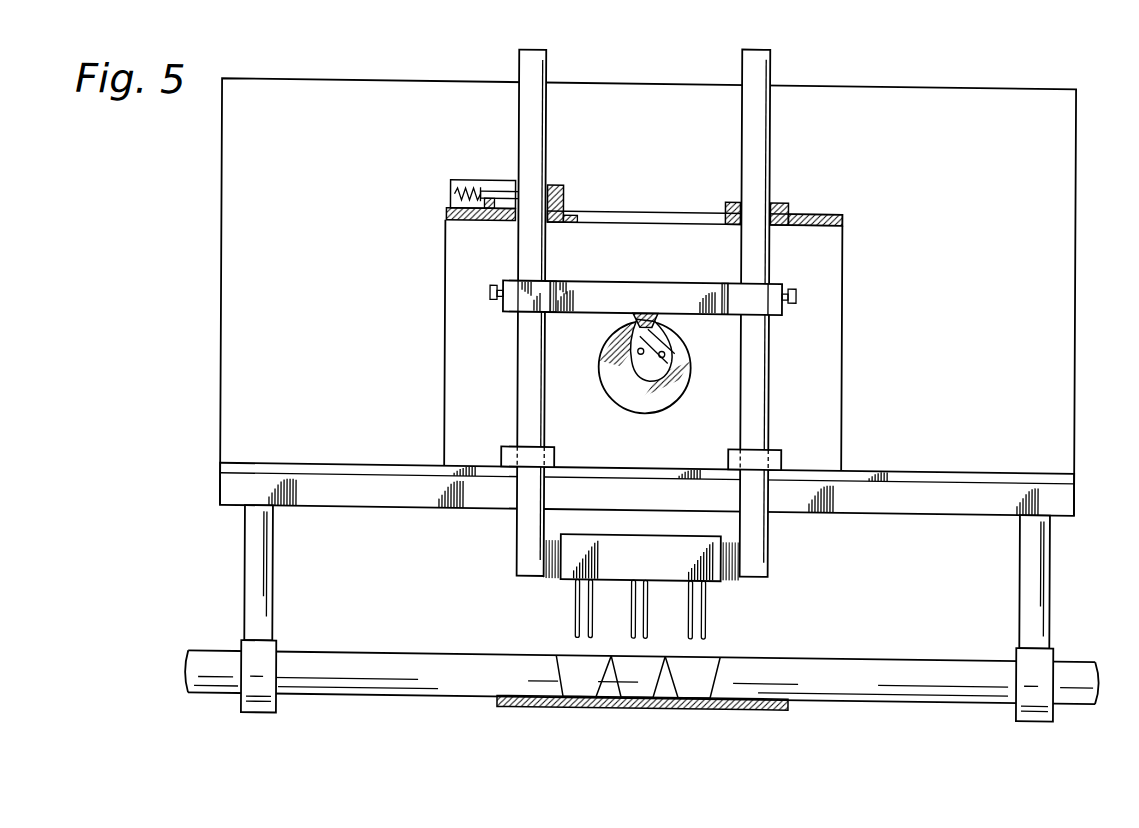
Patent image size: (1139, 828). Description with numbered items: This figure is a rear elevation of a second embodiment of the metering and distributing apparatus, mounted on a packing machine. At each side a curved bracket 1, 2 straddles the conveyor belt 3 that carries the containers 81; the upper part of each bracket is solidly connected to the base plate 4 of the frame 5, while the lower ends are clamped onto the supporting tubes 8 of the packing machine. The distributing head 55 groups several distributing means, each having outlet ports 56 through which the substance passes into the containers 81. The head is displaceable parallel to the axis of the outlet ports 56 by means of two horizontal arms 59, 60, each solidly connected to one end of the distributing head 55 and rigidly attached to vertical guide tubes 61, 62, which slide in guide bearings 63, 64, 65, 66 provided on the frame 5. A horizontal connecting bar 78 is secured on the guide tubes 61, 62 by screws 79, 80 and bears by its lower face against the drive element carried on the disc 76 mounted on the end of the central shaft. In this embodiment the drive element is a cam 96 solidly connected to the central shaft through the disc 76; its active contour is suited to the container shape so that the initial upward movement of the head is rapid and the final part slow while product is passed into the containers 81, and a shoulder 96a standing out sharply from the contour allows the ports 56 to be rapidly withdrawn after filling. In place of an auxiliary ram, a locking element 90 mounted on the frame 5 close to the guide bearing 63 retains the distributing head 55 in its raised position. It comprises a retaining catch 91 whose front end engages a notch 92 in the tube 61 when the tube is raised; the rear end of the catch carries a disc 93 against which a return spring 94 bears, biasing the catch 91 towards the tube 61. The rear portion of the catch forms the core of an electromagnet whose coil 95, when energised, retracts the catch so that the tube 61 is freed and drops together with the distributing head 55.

The curved bracket 1 is at (1037, 584).
The curved bracket 2 is at (253, 570).
The conveyor belt 3 is at (768, 705).
The base plate 4 is at (882, 473).
The frame 5 is at (210, 208).
The supporting tubes 8 is at (382, 667).
The distributing head 55 is at (652, 547).
The outlet ports 56 is at (642, 628).
The horizontal arm 59 is at (553, 565).
The horizontal arm 60 is at (729, 573).
The guide tube 61 is at (523, 385).
The guide tube 62 is at (757, 542).
The guide bearing 63 is at (565, 196).
The guide bearing 64 is at (503, 452).
The guide bearing 65 is at (790, 207).
The guide bearing 66 is at (777, 447).
The disc 76 is at (646, 336).
The connecting bar 78 is at (706, 288).
The screw 79 is at (493, 304).
The screw 80 is at (797, 293).
The containers 81 is at (710, 680).
The locking element 90 is at (484, 192).
The retaining catch 91 is at (513, 185).
The notch 92 is at (517, 193).
The disc 93 is at (472, 213).
The return spring 94 is at (447, 205).
The coil 95 is at (486, 211).
The cam 96 is at (670, 365).
The shoulder 96a is at (648, 322).